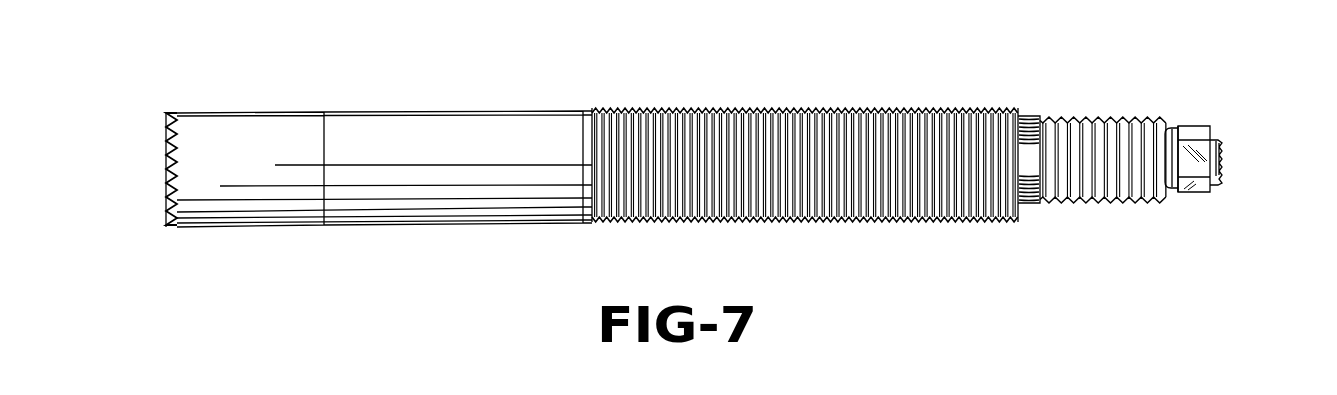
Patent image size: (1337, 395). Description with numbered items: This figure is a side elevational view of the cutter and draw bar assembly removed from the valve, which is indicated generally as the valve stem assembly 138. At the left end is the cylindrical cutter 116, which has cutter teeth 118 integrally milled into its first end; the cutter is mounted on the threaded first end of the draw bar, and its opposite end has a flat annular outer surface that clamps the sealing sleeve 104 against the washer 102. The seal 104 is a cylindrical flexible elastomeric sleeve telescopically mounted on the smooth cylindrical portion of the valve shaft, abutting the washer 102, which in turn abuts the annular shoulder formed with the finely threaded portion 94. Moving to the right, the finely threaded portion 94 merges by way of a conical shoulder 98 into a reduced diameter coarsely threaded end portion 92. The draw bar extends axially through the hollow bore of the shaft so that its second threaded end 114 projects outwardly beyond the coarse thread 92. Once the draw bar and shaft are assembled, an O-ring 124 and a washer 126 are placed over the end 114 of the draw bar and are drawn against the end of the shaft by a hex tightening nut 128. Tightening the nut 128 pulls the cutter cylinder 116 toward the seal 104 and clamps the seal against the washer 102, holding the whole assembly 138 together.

The cutter teeth 118 is at (164, 140).
The cutter cylinder 116 is at (256, 137).
The elastomeric sleeve or seal 104 is at (466, 135).
The washer 102 is at (591, 112).
The finely threaded portion 94 is at (765, 127).
The conical shoulder 98 is at (1027, 123).
The coarsely threaded end portion 92 is at (1085, 120).
The O-ring 124 is at (1169, 129).
The washer 126 is at (1179, 128).
The hex tightening nut 128 is at (1198, 172).
The second threaded end 114 is at (1223, 150).
The valve stem assembly 138 is at (1063, 262).